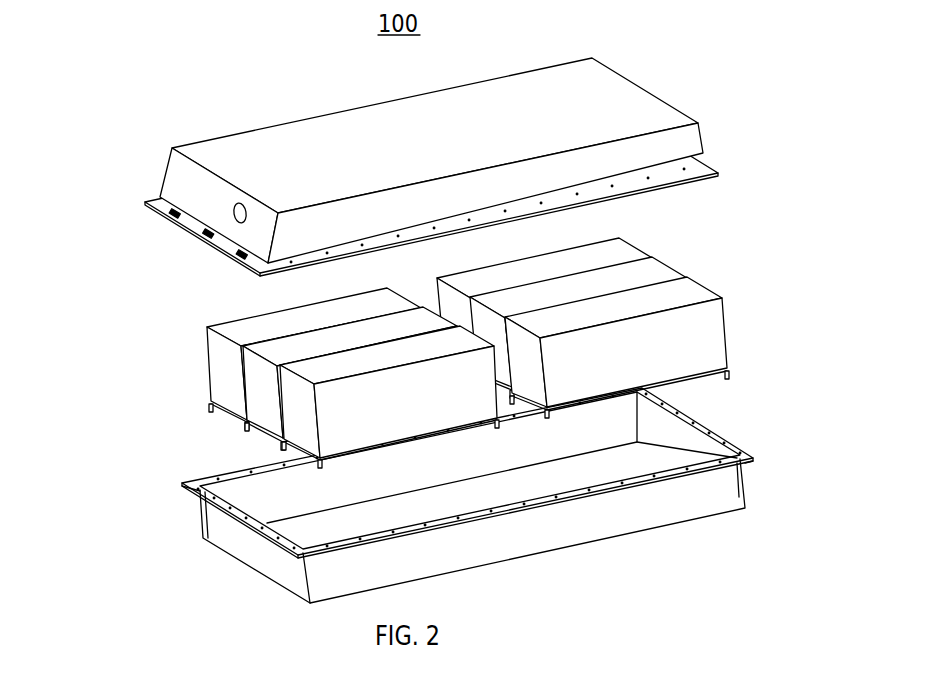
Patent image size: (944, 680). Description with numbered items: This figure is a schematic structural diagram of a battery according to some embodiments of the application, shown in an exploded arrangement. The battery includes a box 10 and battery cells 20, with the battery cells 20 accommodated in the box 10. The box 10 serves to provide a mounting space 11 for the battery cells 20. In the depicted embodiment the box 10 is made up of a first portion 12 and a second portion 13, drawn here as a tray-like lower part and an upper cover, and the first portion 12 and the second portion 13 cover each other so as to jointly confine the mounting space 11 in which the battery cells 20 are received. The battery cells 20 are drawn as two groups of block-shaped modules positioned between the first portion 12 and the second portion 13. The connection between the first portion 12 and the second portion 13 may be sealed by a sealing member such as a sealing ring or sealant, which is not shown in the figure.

The box 10 is at (97, 351).
The mounting space 11 is at (688, 446).
The first portion 12 is at (438, 494).
The second portion 13 is at (205, 213).
The battery cells 20 is at (687, 293).